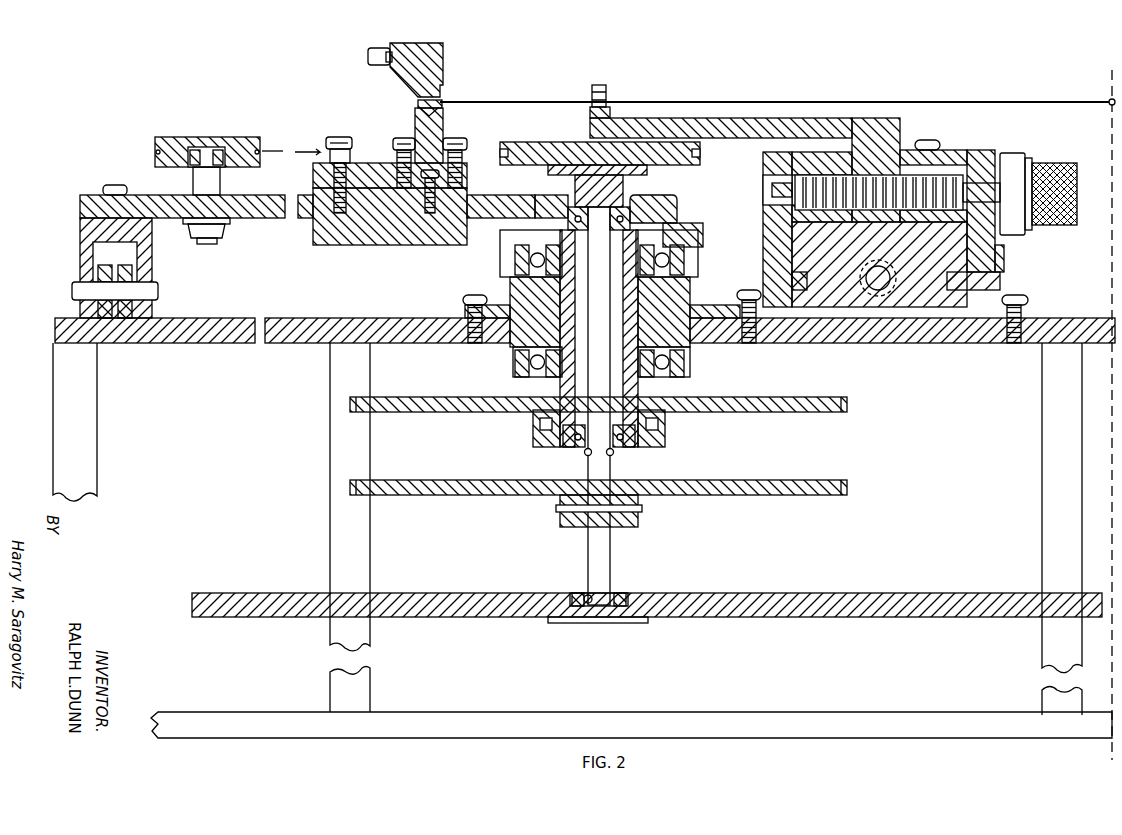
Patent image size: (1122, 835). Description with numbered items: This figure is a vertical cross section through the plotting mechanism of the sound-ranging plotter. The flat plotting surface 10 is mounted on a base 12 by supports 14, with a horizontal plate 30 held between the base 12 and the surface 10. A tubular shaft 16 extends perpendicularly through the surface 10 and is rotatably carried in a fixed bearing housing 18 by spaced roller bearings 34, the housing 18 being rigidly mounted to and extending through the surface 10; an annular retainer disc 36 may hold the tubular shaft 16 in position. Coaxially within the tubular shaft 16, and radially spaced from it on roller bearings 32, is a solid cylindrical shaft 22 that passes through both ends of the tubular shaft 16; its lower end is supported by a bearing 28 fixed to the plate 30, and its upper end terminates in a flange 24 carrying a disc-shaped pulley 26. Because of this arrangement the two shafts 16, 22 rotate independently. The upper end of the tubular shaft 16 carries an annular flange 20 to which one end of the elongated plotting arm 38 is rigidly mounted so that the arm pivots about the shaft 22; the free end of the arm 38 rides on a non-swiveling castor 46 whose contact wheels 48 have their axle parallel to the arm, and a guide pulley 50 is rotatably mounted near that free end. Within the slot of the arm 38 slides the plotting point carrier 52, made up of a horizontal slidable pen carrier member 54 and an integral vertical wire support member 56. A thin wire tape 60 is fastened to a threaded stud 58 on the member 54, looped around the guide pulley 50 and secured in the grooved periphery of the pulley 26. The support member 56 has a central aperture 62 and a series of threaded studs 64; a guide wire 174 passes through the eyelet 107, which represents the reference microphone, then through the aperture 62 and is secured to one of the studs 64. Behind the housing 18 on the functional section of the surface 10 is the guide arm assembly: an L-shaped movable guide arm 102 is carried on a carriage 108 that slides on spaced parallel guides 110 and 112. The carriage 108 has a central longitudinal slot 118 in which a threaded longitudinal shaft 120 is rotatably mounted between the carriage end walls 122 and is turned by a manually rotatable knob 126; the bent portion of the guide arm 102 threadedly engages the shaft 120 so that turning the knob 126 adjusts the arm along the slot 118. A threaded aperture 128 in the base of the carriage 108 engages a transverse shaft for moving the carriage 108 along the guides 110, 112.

The plotting surface 10 is at (294, 320).
The base 12 is at (220, 732).
The supports 14 is at (99, 456).
The tubular shaft 16 is at (637, 389).
The bearing housing 18 is at (505, 284).
The annular flange 20 is at (660, 212).
The solid cylindrical shaft 22 is at (585, 455).
The flange 24 is at (637, 173).
The disc-shaped pulley 26 is at (508, 142).
The bearing 28 is at (616, 592).
The horizontal plate 30 is at (666, 617).
The roller bearings 32 is at (624, 223).
The roller bearings 34 is at (664, 263).
The annular retainer disc 36 is at (613, 455).
The plotting arm 38 is at (240, 199).
The non-swiveling castor 46 is at (78, 262).
The contact wheels 48 is at (137, 272).
The guide pulley 50 is at (163, 138).
The plotting point carrier 52 is at (389, 135).
The slidable pen carrier member 54 is at (338, 246).
The vertical wire support member 56 is at (436, 40).
The threaded stud 58 is at (333, 136).
The wire tape 60 is at (266, 150).
The central aperture 62 is at (442, 100).
The threaded studs 64 is at (372, 50).
The movable guide arm 102 is at (845, 118).
The eyelet 107 is at (603, 85).
The carriage 108 is at (970, 142).
The guide 110 is at (765, 271).
The guide 112 is at (994, 283).
The central longitudinal slot 118 is at (962, 171).
The threaded longitudinal shaft 120 is at (915, 212).
The carriage end walls 122 is at (762, 159).
The knob 126 is at (1078, 190).
The threaded aperture 128 is at (880, 283).
The guide wire 174 is at (926, 102).